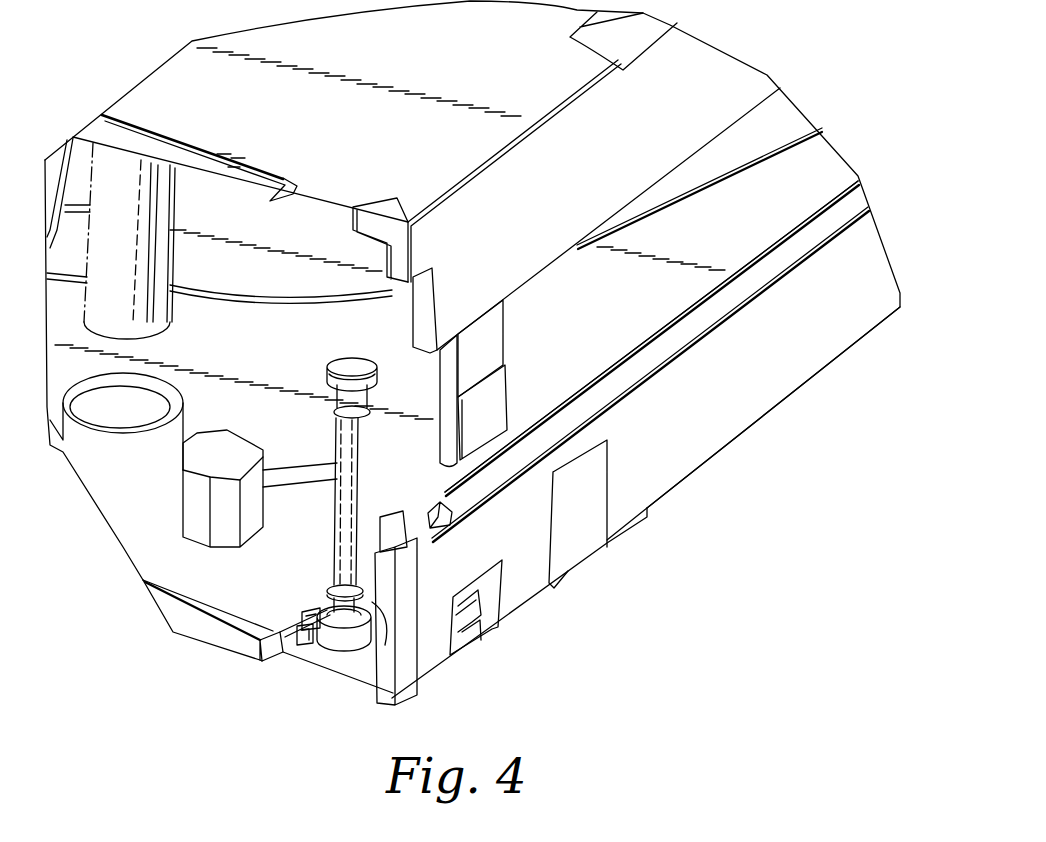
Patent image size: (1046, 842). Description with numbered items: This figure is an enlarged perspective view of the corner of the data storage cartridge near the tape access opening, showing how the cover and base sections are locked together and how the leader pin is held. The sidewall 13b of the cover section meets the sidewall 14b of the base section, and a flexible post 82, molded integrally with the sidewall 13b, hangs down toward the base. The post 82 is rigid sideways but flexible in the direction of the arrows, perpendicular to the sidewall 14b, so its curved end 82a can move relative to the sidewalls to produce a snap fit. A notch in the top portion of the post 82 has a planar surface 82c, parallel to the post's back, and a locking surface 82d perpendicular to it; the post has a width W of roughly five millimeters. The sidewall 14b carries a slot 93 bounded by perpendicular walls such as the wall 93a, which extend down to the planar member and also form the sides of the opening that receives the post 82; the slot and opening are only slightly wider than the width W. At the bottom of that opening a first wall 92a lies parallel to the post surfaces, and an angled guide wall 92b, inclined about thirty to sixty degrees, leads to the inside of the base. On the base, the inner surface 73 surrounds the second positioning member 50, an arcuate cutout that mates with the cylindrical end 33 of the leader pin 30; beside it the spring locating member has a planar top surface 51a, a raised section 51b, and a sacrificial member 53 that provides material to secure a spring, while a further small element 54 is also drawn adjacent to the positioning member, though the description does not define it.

The sidewall 13b is at (566, 197).
The sidewall 14b is at (710, 435).
The leader pin 30 is at (336, 538).
The cylindrical end 33 is at (332, 642).
The second positioning member 50 is at (327, 603).
The top surface 51a is at (398, 655).
The raised section 51b is at (439, 503).
The sacrificial member 53 is at (380, 516).
The clip 54 is at (308, 645).
The inner surface 73 is at (237, 592).
The flexible post 82 is at (513, 387).
The end 82a is at (437, 470).
The planar surface 82c is at (505, 332).
The locking surface 82d is at (500, 378).
The first wall 92a is at (473, 627).
The angled guide wall 92b is at (458, 637).
The slot 93 is at (490, 471).
The wall 93a is at (495, 455).
The width W is at (502, 352).